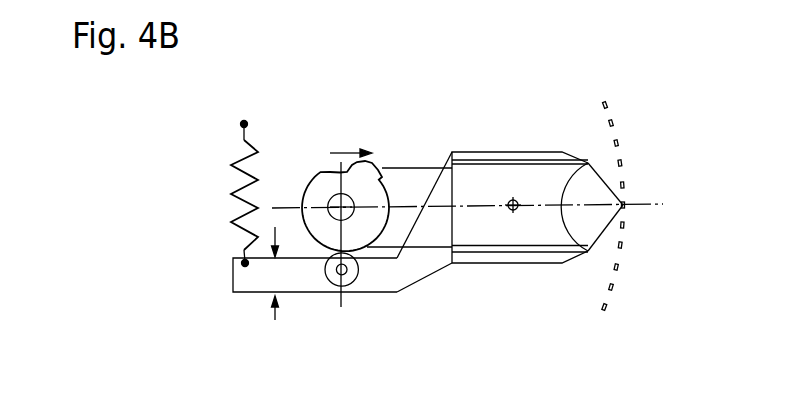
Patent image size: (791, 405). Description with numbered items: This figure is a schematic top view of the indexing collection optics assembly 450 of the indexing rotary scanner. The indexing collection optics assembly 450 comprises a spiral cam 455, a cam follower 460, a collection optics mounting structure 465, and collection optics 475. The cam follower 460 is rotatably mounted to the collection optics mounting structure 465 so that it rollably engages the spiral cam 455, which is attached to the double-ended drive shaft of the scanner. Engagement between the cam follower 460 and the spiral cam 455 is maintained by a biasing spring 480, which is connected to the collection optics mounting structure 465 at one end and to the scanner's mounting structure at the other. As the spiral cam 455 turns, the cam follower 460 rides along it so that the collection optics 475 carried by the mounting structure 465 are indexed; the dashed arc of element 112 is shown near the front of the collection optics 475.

The biasing spring 480 is at (231, 164).
The spiral cam 455 is at (374, 166).
The indexing collection optics assembly 450 is at (513, 130).
The collection optics 475 is at (558, 240).
The cam follower 460 is at (266, 273).
The collection optics mounting structure 465 is at (397, 292).
The ring 112 is at (623, 247).